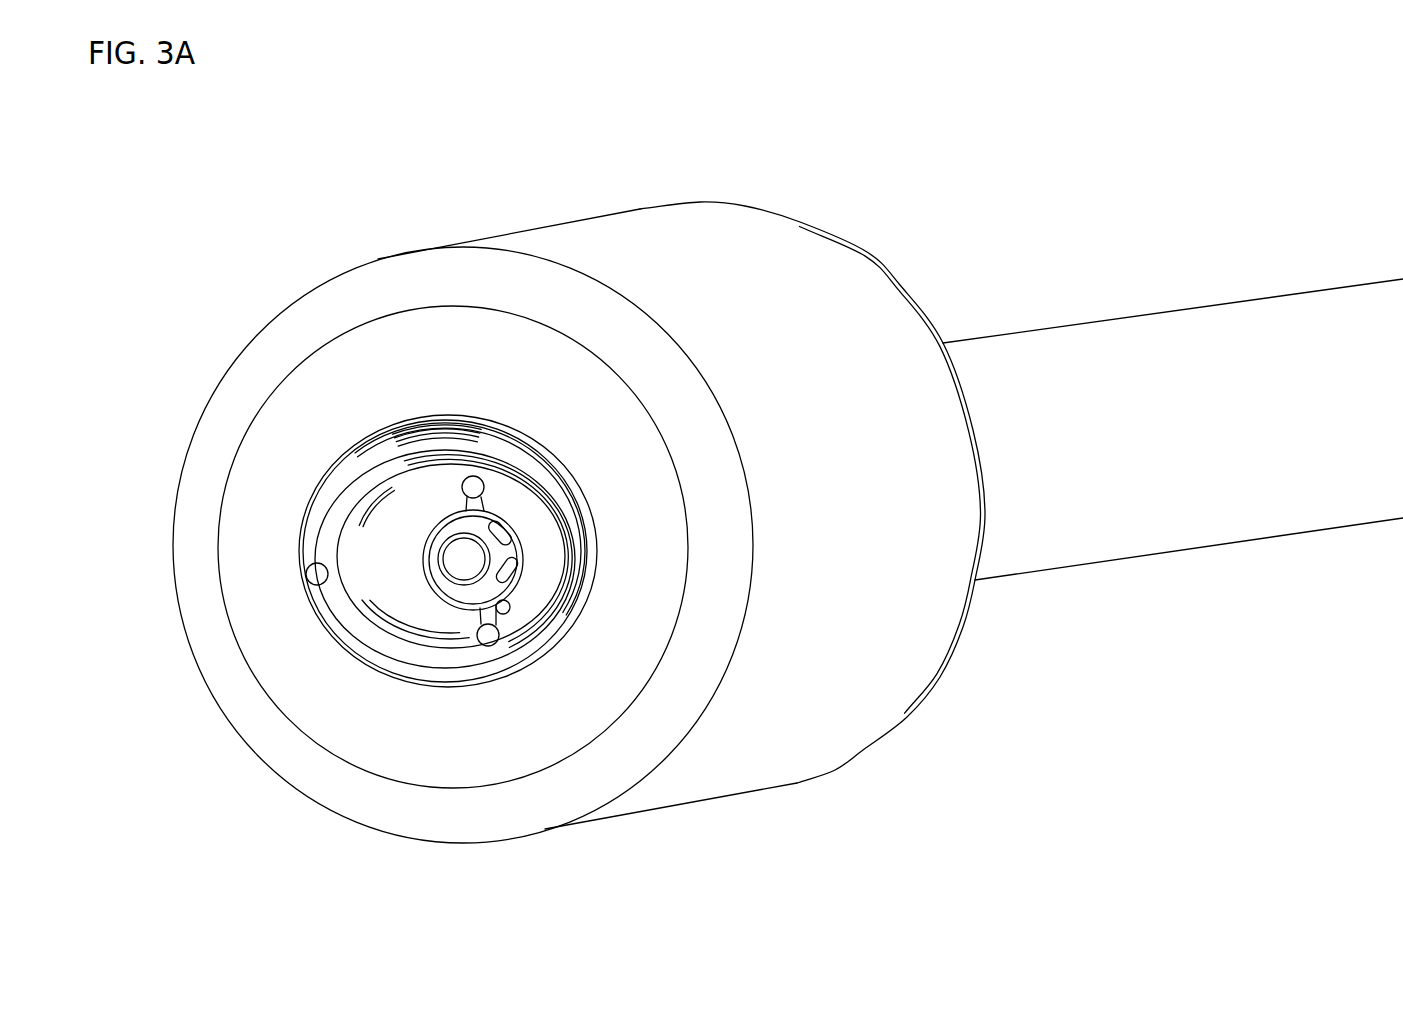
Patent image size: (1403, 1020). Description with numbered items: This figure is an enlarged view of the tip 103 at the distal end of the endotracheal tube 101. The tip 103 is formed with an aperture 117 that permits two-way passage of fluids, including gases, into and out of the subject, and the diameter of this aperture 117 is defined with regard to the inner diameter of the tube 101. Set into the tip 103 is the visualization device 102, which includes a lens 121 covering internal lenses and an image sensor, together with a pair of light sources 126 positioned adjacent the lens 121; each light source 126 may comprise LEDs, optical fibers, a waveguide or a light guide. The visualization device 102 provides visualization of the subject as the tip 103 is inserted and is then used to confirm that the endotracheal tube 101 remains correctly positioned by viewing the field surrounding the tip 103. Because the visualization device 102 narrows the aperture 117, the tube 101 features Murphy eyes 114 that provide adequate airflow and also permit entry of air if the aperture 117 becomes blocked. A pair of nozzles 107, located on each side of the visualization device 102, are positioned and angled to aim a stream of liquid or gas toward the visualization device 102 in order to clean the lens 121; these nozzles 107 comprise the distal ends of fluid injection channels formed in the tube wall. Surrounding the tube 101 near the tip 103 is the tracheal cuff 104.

The endotracheal tube 101 is at (1176, 342).
The visualization device 102 is at (492, 595).
The tip 103 is at (342, 472).
The tracheal cuff 104 is at (693, 215).
The nozzles 107 is at (462, 500).
The Murphy eyes 114 is at (423, 427).
The aperture 117 is at (387, 565).
The lens 121 is at (457, 553).
The light source 126 is at (515, 572).